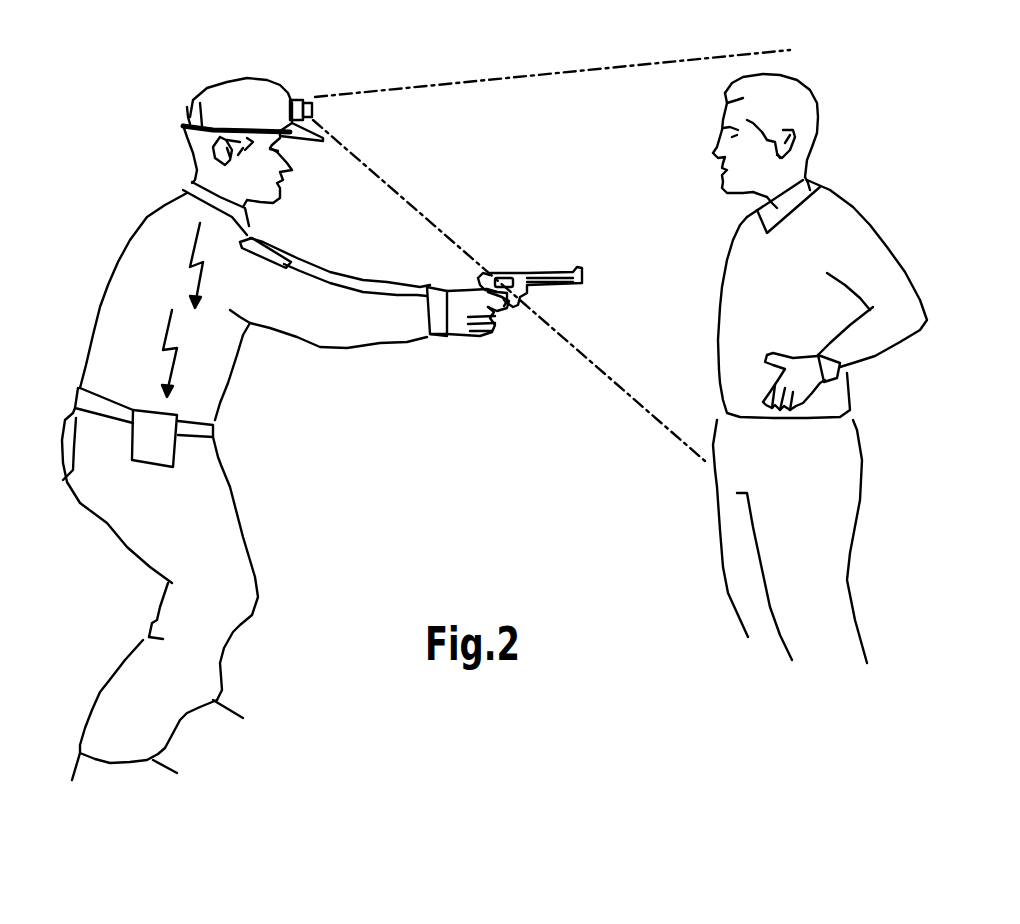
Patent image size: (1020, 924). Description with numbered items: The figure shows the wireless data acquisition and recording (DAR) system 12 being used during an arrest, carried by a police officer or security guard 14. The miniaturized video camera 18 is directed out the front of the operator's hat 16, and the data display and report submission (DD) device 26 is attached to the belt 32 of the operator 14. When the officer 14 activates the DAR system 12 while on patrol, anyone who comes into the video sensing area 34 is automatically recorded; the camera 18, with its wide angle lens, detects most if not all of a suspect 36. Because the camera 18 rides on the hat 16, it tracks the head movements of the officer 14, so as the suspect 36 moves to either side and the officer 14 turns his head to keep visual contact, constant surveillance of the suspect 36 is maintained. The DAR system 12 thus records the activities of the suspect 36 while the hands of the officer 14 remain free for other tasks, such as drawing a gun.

The wireless data acquisition and recording (DAR) system 12 is at (273, 399).
The operator 14 is at (202, 141).
The operator's hat 16 is at (253, 79).
The miniaturized video camera 18 is at (325, 74).
The data display and report submission (DD) device 26 is at (154, 468).
The belt 32 is at (180, 414).
The video sensing area 34 is at (551, 237).
The suspect 36 is at (820, 368).